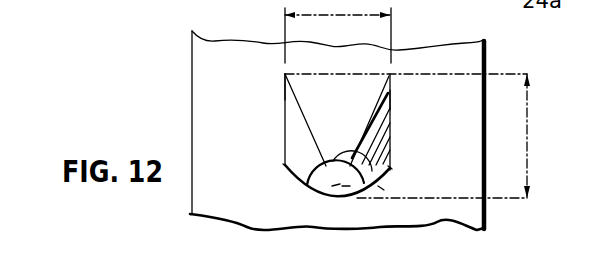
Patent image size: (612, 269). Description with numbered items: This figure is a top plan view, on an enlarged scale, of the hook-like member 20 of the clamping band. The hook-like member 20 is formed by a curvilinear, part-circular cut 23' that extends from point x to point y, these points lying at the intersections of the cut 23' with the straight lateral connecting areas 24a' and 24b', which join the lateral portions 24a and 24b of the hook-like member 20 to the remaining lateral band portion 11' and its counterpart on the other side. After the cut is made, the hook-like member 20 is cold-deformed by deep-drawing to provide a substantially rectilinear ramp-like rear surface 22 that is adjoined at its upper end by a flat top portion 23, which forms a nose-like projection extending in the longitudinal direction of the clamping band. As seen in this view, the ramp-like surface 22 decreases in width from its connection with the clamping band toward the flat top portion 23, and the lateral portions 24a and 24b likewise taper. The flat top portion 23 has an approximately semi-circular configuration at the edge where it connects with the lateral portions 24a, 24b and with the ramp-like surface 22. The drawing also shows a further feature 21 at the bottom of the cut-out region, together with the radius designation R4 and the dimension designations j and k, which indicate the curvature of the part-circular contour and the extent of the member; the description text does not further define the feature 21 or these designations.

The lateral band portion 11' is at (310, 122).
The hook-like member 20 is at (396, 98).
The groove bottom 21 is at (303, 187).
The ramp-like rear surface 22 is at (342, 93).
The flat top portion 23 is at (316, 221).
The curvilinear cut 23' is at (359, 223).
The lateral portion 24a is at (267, 120).
The straight lateral connecting area 24a' is at (241, 119).
The lateral portion 24b is at (408, 121).
The straight lateral connecting area 24b' is at (401, 157).
The point x is at (283, 166).
The point y is at (391, 167).
The bottom radius R4 is at (303, 173).
The slot depth dimension j is at (443, 136).
The slot width dimension k is at (338, 31).